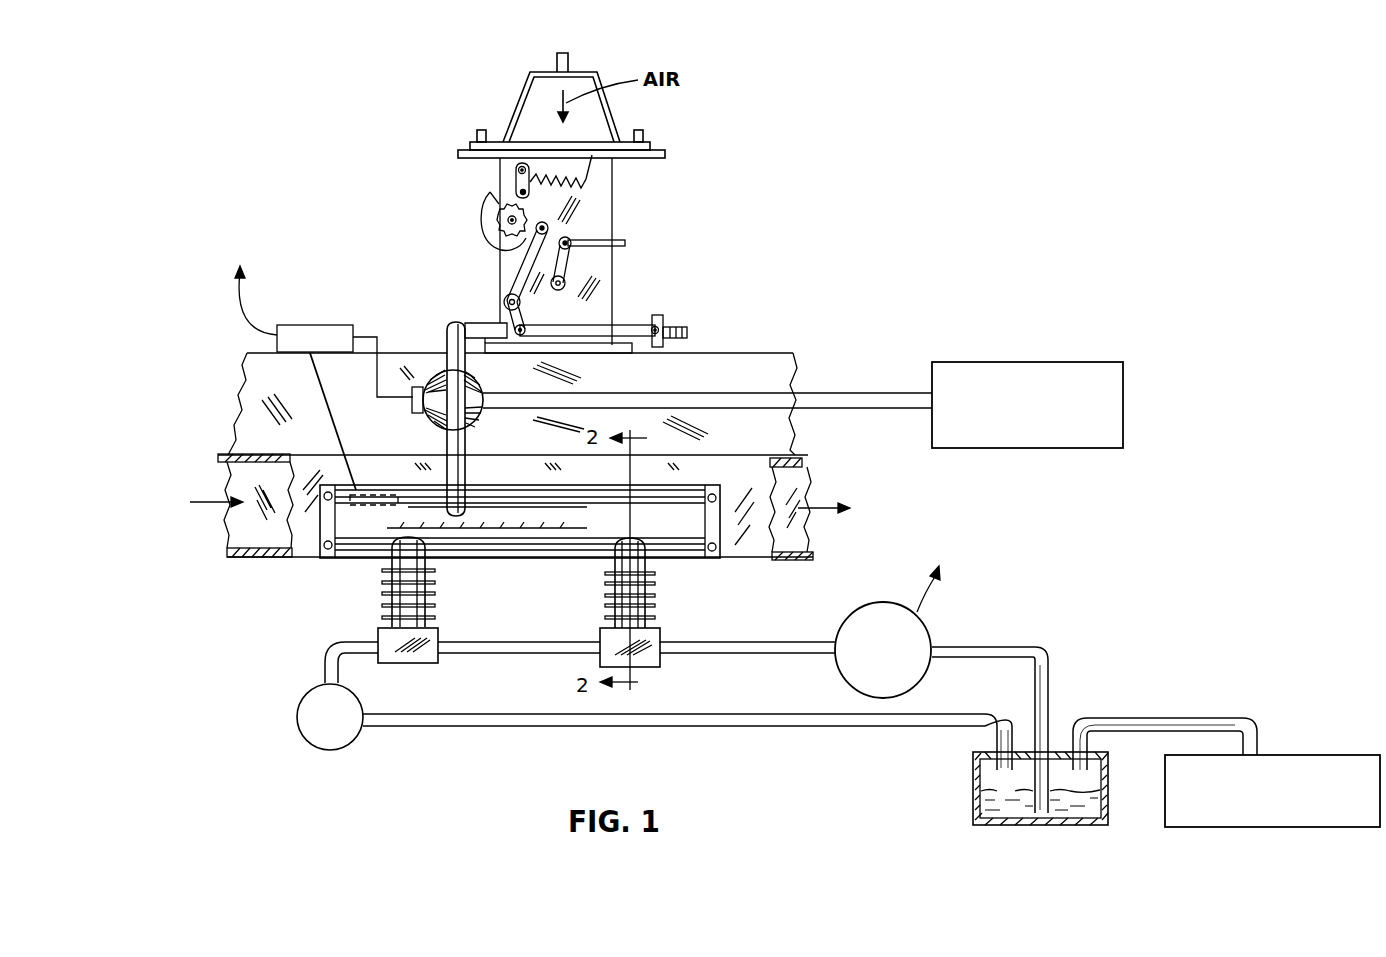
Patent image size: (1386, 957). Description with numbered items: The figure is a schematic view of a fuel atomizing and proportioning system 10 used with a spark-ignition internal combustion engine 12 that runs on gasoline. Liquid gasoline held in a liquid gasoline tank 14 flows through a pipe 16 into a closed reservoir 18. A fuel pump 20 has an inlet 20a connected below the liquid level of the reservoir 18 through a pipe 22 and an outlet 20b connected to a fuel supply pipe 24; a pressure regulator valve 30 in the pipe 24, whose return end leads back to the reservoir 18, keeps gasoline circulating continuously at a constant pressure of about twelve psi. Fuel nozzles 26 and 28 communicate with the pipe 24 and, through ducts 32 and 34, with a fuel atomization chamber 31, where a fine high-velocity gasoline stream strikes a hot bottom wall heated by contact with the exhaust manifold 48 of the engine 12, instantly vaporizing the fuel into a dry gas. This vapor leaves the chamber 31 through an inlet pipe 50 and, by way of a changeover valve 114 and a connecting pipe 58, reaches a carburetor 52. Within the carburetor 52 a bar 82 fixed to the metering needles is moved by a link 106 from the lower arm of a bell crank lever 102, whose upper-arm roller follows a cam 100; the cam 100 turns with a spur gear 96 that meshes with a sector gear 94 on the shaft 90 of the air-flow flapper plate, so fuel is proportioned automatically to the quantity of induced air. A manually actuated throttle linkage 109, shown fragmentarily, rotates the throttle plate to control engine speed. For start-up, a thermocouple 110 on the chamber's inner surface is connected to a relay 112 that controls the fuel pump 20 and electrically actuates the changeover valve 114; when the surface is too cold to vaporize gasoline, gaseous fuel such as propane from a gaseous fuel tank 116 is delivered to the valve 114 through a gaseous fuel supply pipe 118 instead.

The fuel atomizing and proportioning system 10 is at (773, 290).
The internal combustion engine 12 is at (214, 323).
The liquid gasoline tank 14 is at (1302, 755).
The pipe 16 is at (1167, 718).
The closed reservoir 18 is at (973, 786).
The fuel pump 20 is at (931, 632).
The inlet 20a is at (933, 663).
The outlet 20b is at (834, 658).
The pipe 22 is at (1048, 658).
The fuel supply pipe 24 is at (733, 641).
The fuel nozzle 26 is at (660, 667).
The fuel nozzle 28 is at (402, 665).
The pressure regulator valve 30 is at (302, 742).
The fuel atomization chamber 31 is at (505, 575).
The duct 32 is at (652, 590).
The duct 34 is at (392, 598).
The exhaust manifold 48 is at (305, 455).
The inlet pipe 50 is at (462, 465).
The carburetor 52 is at (722, 196).
The connecting pipe 58 is at (470, 322).
The bar 82 is at (664, 317).
The shaft 90 is at (514, 173).
The sector gear 94 is at (570, 184).
The spur gear 96 is at (493, 233).
The cam 100 is at (485, 205).
The bell crank lever 102 is at (518, 265).
The link 106 is at (628, 322).
The throttle linkage 109 is at (618, 247).
The thermocouple 110 is at (388, 495).
The relay 112 is at (312, 323).
The changeover valve 114 is at (470, 425).
The gaseous fuel tank 116 is at (1065, 362).
The gaseous fuel supply pipe 118 is at (637, 393).